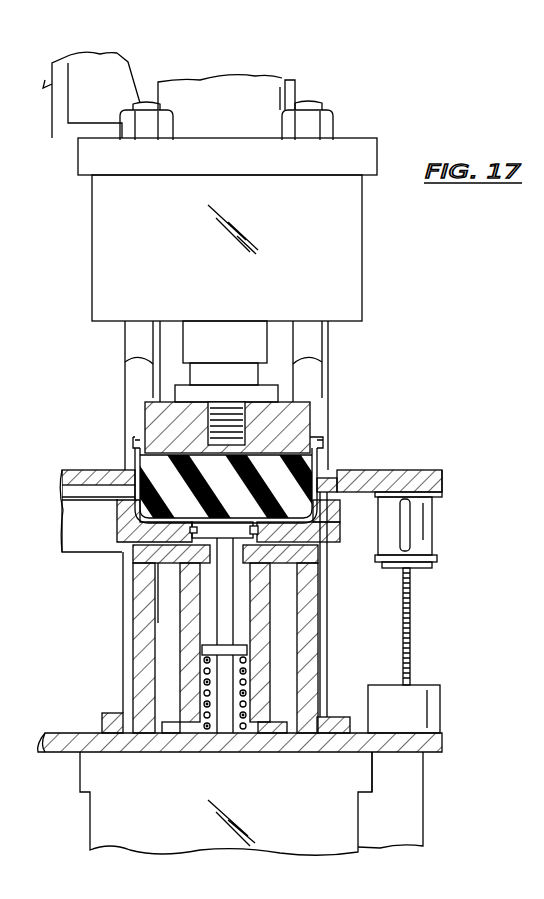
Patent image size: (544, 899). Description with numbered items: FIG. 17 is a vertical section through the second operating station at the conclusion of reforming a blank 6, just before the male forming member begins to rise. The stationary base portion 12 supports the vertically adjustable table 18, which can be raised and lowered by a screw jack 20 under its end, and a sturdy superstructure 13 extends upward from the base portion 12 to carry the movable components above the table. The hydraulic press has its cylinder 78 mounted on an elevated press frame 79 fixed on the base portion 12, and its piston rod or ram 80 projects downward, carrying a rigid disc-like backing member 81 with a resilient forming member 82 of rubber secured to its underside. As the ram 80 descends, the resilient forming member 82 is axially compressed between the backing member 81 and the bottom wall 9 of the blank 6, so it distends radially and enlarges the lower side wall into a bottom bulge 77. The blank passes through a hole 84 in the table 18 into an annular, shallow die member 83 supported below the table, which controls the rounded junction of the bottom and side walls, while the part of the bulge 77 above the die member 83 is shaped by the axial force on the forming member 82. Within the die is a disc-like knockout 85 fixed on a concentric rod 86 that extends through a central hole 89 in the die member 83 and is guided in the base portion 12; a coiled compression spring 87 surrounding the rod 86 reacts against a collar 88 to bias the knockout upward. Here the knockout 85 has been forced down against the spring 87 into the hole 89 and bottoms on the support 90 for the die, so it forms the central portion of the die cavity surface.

The superstructure 13 is at (128, 62).
The cylinder 78 is at (292, 96).
The press frame 79 is at (362, 252).
The piston rod or ram 80 is at (258, 373).
The backing member 81 is at (293, 412).
The resilient forming member 82 is at (162, 470).
The blank 6 is at (327, 453).
The hole 84 is at (338, 473).
The table 18 is at (423, 470).
The bottom bulge 77 is at (65, 503).
The central hole 89 is at (160, 527).
The die member 83 is at (328, 515).
The bottom wall 9 is at (333, 530).
The knockout 85 is at (258, 534).
The support 90 is at (178, 558).
The rod 86 is at (217, 608).
The collar 88 is at (247, 648).
The coiled compression spring 87 is at (243, 693).
The screw jack 20 is at (412, 640).
The base portion 12 is at (425, 793).